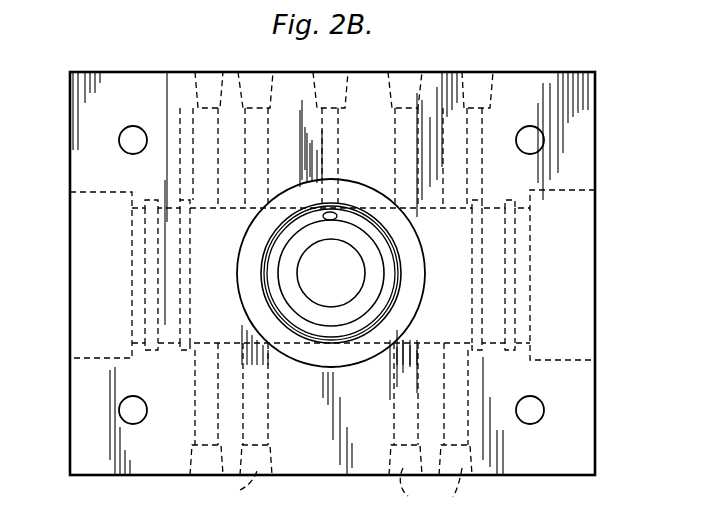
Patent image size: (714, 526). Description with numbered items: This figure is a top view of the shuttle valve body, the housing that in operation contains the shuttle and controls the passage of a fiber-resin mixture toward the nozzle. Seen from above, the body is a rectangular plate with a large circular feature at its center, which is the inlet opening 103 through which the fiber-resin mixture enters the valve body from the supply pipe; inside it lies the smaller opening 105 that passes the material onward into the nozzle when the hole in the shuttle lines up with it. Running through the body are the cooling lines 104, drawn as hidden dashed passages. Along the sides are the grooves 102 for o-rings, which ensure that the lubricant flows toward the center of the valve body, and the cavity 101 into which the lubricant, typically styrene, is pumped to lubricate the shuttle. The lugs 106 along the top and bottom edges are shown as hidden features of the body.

The cavity 101 is at (217, 231).
The grooves for o-rings 102 is at (152, 265).
The inlet opening 103 is at (352, 190).
The cooling lines 104 is at (233, 343).
The opening 105 is at (327, 243).
The mounting lugs 106 is at (205, 470).